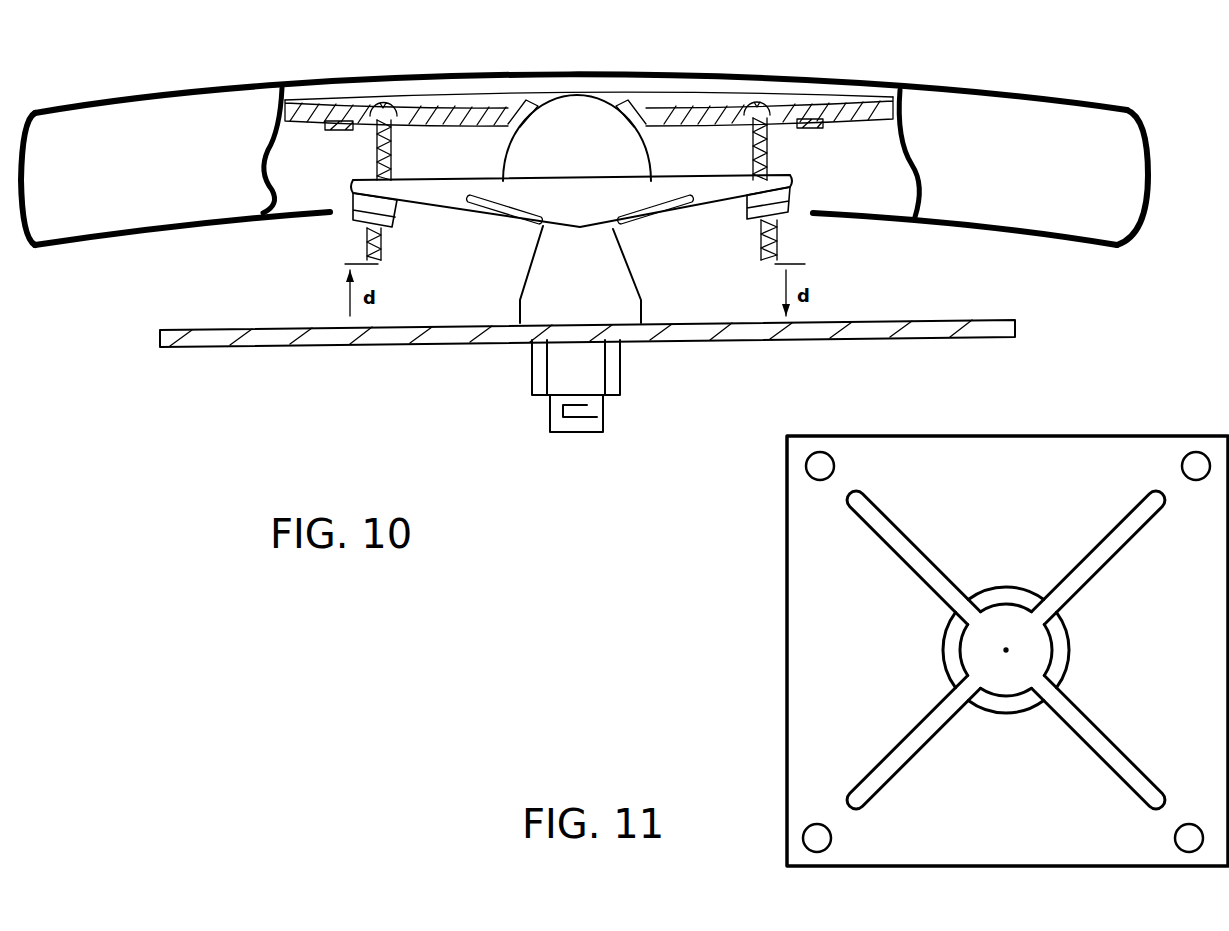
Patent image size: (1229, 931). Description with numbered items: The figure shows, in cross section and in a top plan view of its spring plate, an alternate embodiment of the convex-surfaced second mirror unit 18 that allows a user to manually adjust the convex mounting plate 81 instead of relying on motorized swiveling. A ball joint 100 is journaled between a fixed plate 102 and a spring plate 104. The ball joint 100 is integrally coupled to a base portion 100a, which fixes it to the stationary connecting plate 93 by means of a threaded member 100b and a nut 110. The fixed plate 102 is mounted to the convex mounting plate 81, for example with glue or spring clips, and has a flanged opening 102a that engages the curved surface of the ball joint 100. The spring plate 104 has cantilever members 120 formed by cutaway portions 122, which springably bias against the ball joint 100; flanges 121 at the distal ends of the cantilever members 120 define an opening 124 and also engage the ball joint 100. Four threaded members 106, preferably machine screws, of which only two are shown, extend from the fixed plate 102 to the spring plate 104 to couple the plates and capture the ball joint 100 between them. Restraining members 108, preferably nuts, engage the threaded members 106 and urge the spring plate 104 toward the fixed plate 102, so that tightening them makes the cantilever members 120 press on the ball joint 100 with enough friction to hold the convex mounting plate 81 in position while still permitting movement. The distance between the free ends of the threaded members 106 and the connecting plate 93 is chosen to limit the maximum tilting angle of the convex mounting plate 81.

In FIG. 10, the second mirror unit 18 is at (843, 53).
In FIG. 10, the convex mounting plate 81 is at (1025, 127).
In FIG. 10, the connecting plate 93 is at (913, 337).
In FIG. 10, the ball joint 100 is at (663, 160).
In FIG. 10, the base portion 100a is at (648, 304).
In FIG. 10, the threaded member 100b is at (607, 431).
In FIG. 10, the fixed plate 102 is at (432, 105).
In FIG. 10, the flanged opening 102a is at (647, 95).
In FIG. 10, the spring plate 104 is at (571, 245).
In FIG. 11, the spring plate 104 is at (914, 651).
In FIG. 10, the threaded members 106 is at (358, 249).
In FIG. 10, the restraining members 108 is at (393, 217).
In FIG. 10, the nut 110 is at (530, 370).
In FIG. 10, the cantilever members 120 is at (570, 231).
In FIG. 11, the cantilever members 120 is at (1005, 578).
In FIG. 11, the flanges 121 is at (1058, 639).
In FIG. 11, the cutaway portions 122 is at (1111, 550).
In FIG. 11, the opening 124 is at (985, 643).